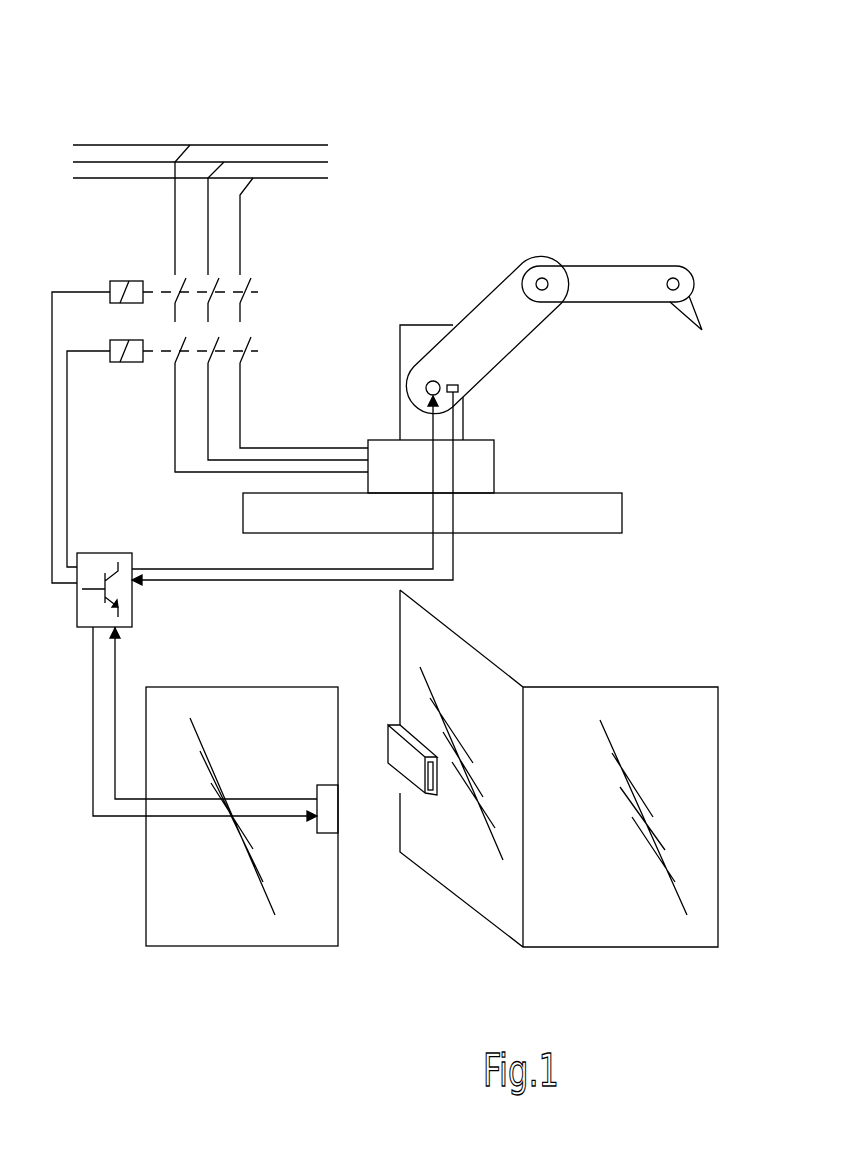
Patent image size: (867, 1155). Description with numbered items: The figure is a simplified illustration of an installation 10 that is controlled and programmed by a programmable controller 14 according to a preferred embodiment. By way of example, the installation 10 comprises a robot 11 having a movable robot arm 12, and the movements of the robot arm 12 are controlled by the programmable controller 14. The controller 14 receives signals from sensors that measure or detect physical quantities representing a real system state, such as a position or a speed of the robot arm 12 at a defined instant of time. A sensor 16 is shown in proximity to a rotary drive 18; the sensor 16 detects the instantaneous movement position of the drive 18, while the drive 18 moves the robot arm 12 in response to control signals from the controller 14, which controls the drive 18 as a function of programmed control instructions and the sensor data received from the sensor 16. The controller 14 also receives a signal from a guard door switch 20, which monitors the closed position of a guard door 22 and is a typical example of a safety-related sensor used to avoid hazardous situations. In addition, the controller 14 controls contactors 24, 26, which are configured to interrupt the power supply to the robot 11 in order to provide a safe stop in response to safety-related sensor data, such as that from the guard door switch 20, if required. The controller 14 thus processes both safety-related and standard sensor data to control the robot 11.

The installation 10 is at (586, 143).
The robot 11 is at (603, 266).
The robot arm 12 is at (495, 317).
The programmable controller 14 is at (80, 601).
The sensor 16 is at (490, 368).
The rotary drive 18 is at (430, 387).
The guard door switch 20 is at (332, 815).
The guard door 22 is at (485, 680).
The contactor 24 is at (125, 281).
The contactor 26 is at (122, 362).